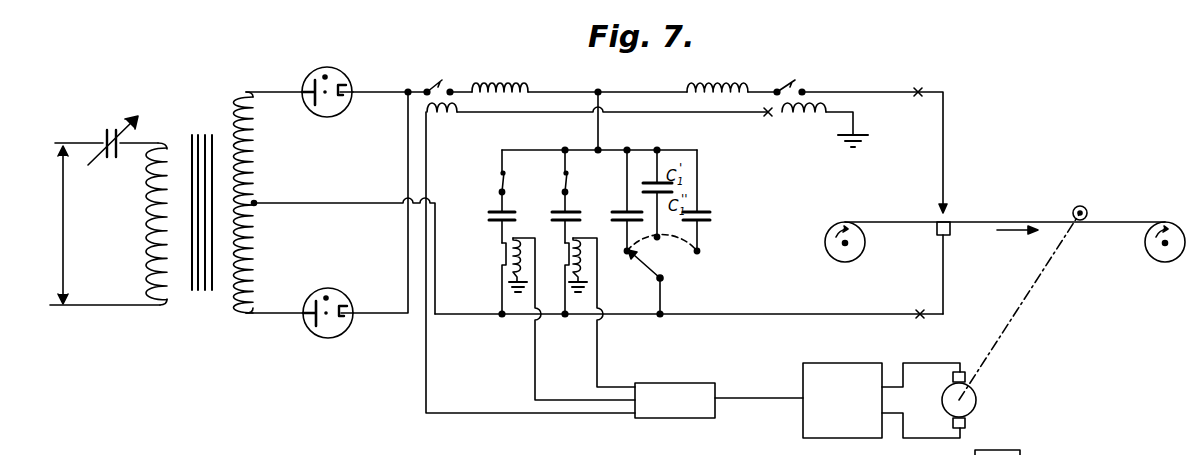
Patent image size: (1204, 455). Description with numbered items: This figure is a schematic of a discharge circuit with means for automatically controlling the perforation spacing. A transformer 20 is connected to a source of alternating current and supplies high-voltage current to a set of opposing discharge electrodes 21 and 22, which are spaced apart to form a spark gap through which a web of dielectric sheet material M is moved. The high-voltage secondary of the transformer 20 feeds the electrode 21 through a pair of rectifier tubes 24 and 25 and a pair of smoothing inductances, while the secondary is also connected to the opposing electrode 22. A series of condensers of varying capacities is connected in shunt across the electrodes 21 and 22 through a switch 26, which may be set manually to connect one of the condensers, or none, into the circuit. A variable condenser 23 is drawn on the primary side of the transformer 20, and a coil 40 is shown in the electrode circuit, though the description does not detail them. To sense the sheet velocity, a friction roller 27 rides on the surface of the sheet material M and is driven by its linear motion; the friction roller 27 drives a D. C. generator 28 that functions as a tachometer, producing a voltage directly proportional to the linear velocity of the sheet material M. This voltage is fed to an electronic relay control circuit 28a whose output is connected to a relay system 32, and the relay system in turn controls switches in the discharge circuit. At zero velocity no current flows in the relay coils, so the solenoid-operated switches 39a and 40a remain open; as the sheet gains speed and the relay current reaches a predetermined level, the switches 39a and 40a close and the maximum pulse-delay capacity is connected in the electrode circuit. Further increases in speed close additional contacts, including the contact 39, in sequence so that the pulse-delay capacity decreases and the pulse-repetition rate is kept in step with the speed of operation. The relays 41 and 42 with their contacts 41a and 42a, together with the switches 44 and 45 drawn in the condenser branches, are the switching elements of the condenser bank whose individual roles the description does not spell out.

The transformer 20 is at (196, 133).
The discharge electrode 21 is at (952, 211).
The discharge electrode 22 is at (952, 238).
The variable capacitor 23 is at (112, 125).
The rectifier tube 24 is at (320, 116).
The rectifier tube 25 is at (330, 270).
The switch 26 is at (655, 280).
The friction roller 27 is at (1085, 207).
The D. C. generator 28 is at (977, 400).
The electronic relay control circuit 28a is at (818, 361).
The relay system 32 is at (673, 380).
The contact 39 is at (456, 116).
The solenoid operated switch 39a is at (442, 78).
The coil 40 is at (803, 118).
The solenoid operated switch 40a is at (792, 84).
The relay 41 is at (523, 265).
The relay contact 41a is at (500, 256).
The relay 42 is at (584, 265).
The relay contact 42a is at (563, 252).
The switch 44 is at (565, 173).
The switch 45 is at (500, 184).